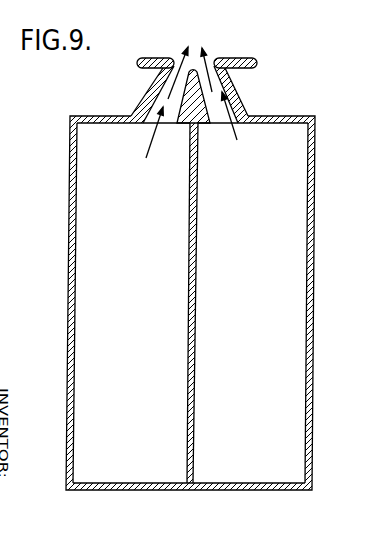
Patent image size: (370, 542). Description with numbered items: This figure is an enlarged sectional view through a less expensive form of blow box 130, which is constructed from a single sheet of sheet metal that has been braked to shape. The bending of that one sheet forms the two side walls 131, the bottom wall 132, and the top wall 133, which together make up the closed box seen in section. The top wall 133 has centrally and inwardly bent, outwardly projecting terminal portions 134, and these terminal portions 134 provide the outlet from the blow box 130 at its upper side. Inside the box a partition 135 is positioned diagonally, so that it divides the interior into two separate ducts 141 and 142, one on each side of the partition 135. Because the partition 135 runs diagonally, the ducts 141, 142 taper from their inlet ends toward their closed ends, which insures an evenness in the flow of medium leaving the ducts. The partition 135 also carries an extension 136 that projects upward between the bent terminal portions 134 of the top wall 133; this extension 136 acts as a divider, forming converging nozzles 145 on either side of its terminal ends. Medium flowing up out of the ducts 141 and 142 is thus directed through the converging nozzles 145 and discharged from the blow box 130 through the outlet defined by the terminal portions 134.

The blow box 130 is at (312, 285).
The side walls 131 is at (68, 247).
The bottom wall 132 is at (122, 483).
The top wall 133 is at (293, 115).
The terminal portions 134 is at (166, 38).
The partition 135 is at (190, 233).
The extension 136 is at (207, 122).
The duct 141 is at (82, 181).
The duct 142 is at (292, 243).
The converging nozzles 145 is at (151, 86).